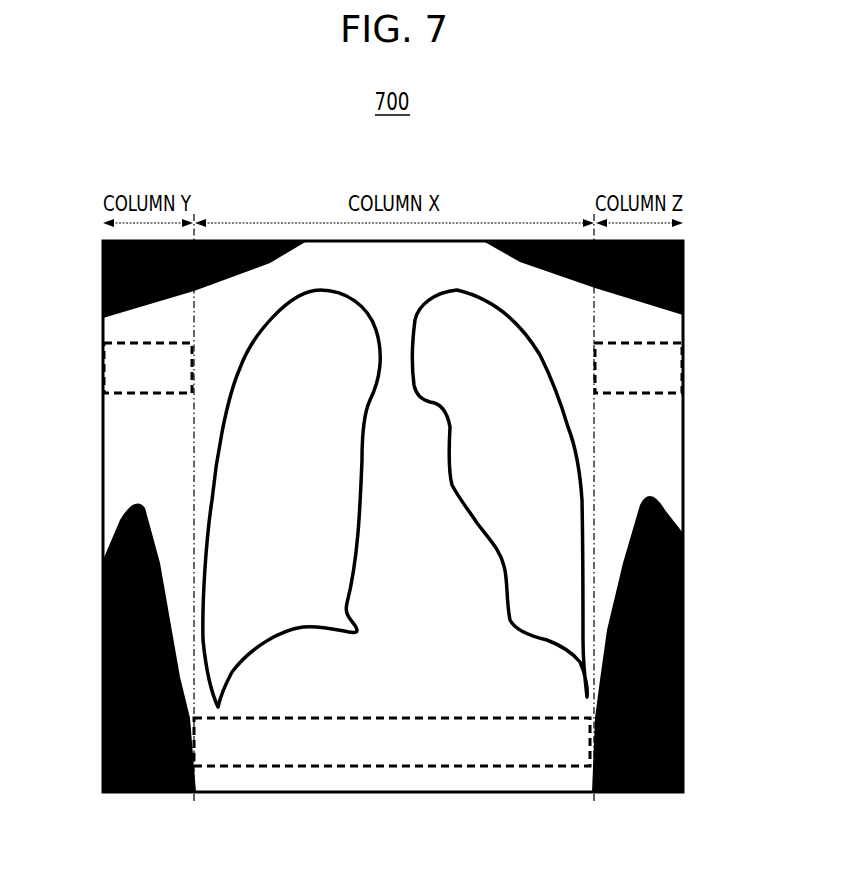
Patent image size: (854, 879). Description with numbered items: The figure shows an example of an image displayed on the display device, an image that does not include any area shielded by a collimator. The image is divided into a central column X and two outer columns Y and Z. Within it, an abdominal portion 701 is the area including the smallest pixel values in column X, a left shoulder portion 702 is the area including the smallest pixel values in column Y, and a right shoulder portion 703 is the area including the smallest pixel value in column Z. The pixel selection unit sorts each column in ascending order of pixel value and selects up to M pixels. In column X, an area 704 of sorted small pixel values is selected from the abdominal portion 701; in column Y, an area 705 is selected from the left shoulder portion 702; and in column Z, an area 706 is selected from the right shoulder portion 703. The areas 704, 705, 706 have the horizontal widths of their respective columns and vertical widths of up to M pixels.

The abdominal portion 701 is at (263, 777).
The left shoulder portion 702 is at (125, 329).
The right shoulder portion 703 is at (666, 328).
The area 704 is at (462, 718).
The area 705 is at (137, 395).
The area 706 is at (650, 395).